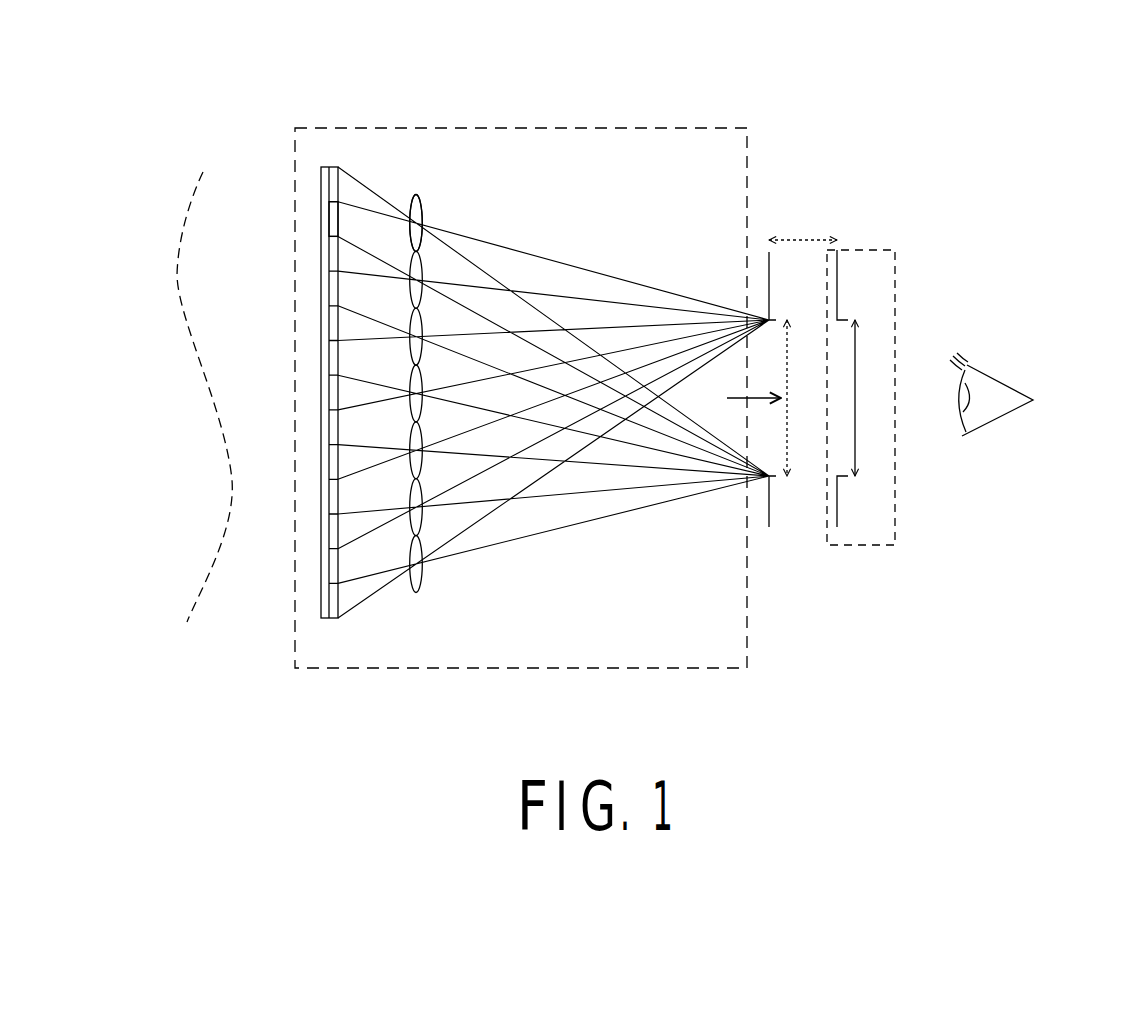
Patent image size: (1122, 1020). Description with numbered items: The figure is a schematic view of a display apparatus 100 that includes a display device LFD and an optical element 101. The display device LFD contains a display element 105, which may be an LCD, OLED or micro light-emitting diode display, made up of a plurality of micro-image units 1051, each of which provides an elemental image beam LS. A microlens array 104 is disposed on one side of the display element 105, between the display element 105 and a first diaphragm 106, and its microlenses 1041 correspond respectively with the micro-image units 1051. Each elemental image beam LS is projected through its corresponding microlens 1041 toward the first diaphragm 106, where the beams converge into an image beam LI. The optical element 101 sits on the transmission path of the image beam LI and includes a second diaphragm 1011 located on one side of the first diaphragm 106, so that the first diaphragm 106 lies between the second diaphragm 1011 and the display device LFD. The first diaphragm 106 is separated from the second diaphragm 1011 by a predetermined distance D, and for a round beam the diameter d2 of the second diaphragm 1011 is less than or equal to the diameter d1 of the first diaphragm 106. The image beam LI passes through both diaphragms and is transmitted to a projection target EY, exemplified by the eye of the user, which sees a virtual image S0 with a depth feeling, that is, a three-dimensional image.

The display apparatus 100 is at (1092, 715).
The optical element 101 is at (894, 280).
The second diaphragm 1011 is at (837, 503).
The microlens array 104 is at (417, 180).
The microlens 1041 is at (424, 213).
The display element 105 is at (318, 183).
The micro-image unit 1051 is at (333, 224).
The first diaphragm 106 is at (772, 515).
The display device LFD is at (676, 128).
The elemental image beam LS is at (590, 268).
The image beam LI is at (734, 397).
The virtual image S0 is at (203, 164).
The projection target EY is at (990, 403).
The predetermined distance D is at (803, 213).
The diameter of the first diaphragm d1 is at (804, 398).
The diameter of the second diaphragm d2 is at (873, 398).